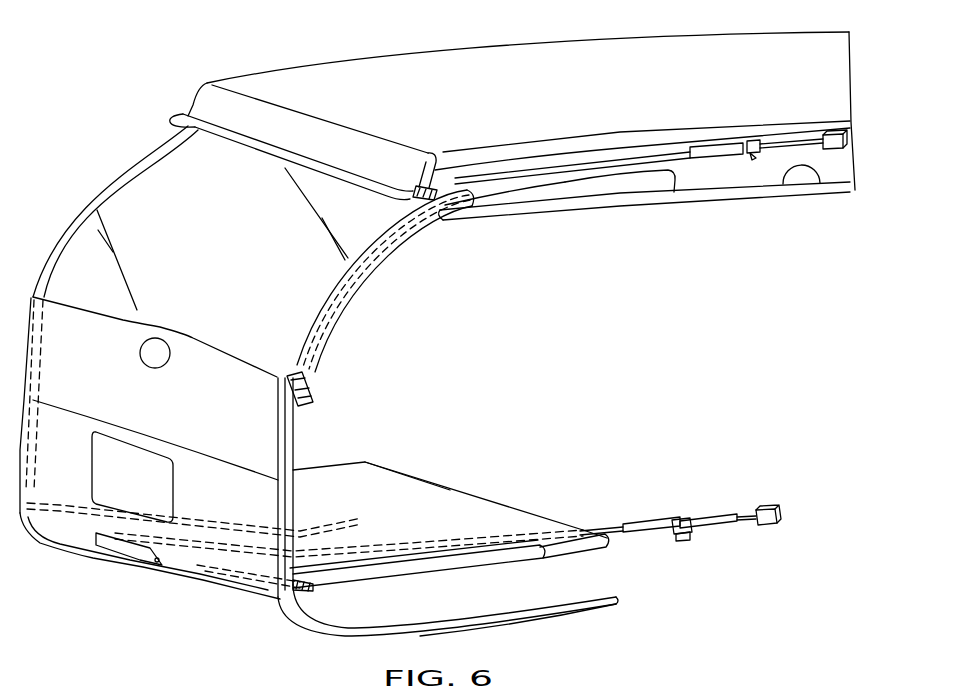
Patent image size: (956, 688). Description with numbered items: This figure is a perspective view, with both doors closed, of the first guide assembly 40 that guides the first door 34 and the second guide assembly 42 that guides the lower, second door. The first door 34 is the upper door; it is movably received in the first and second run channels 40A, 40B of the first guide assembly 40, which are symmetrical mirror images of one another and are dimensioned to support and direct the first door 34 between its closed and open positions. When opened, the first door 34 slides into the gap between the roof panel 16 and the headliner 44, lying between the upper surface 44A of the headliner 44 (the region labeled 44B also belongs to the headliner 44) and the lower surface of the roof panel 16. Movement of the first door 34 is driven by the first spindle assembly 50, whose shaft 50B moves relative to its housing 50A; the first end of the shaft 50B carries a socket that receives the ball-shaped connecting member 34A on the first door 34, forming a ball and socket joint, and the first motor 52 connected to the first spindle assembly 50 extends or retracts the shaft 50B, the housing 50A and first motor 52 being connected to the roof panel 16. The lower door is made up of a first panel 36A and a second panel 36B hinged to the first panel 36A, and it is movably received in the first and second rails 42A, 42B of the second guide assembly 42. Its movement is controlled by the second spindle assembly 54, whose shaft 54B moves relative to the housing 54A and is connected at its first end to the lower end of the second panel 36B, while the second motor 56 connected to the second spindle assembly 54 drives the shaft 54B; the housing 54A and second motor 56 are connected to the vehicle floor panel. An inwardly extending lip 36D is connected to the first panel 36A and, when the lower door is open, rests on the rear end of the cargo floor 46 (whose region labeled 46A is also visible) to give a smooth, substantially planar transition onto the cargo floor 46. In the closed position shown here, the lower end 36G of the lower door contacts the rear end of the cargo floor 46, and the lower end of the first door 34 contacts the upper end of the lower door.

The roof panel 16 is at (588, 64).
The first door 34 is at (283, 291).
The connecting member 34A is at (444, 172).
The first panel 36A is at (87, 353).
The second panel 36B is at (210, 493).
The inwardly extending lip 36D is at (305, 391).
The lower end 36G is at (298, 599).
The first guide assembly 40 is at (62, 231).
The first run channel 40A is at (115, 164).
The second run channel 40B is at (387, 247).
The second guide assembly 42 is at (323, 636).
The first rail 42A is at (316, 517).
The second rail 42B is at (560, 621).
The headliner 44 is at (750, 212).
The upper surface 44A is at (814, 187).
The tab 44B is at (671, 214).
The cargo floor 46 is at (503, 508).
The floor surface 46A is at (423, 510).
The first spindle assembly 50 is at (710, 145).
The housing 50A is at (773, 139).
The shaft 50B is at (573, 163).
The first motor 52 is at (848, 143).
The second spindle assembly 54 is at (655, 535).
The housing 54A is at (710, 517).
The shaft 54B is at (607, 527).
The second motor 56 is at (772, 526).